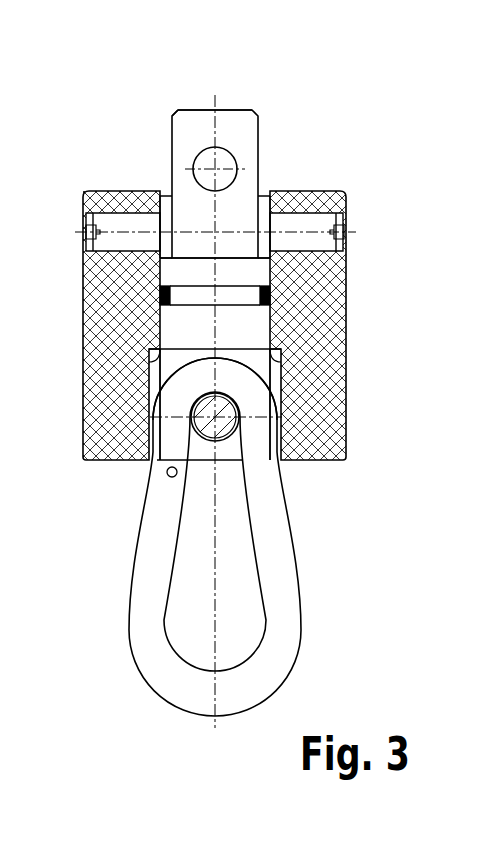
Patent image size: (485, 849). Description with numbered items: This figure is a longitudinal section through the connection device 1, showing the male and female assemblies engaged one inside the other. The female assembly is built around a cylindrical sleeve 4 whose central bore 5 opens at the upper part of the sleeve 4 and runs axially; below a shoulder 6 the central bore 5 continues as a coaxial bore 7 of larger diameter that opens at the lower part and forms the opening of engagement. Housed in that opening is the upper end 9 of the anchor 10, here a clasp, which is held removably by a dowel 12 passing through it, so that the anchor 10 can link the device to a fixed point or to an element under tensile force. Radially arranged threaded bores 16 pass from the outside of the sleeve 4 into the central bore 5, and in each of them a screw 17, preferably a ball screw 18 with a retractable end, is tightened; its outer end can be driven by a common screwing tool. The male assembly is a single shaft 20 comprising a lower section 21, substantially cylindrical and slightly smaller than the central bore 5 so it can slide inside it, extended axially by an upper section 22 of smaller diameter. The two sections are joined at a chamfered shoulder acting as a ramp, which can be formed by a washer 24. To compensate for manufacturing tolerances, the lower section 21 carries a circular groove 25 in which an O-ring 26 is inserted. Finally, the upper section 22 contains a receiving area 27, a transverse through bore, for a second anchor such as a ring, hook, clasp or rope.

The connection device 1 is at (354, 480).
The sleeve 4 is at (332, 426).
The central bore 5 is at (264, 190).
The shoulder 6 is at (150, 352).
The coaxial bore 7 is at (266, 361).
The upper end of the anchor 9 is at (252, 388).
The anchor 10 is at (280, 555).
The dowel 12 is at (210, 412).
The threaded bore 16 is at (343, 222).
The screw 17 is at (112, 224).
The ball screw 18 is at (166, 212).
The shaft 20 is at (232, 108).
The lower section 21 is at (265, 251).
The upper section 22 is at (252, 142).
The washer 24 is at (163, 252).
The circular groove 25 is at (168, 303).
The O-ring 26 is at (270, 294).
The receiving area 27 is at (175, 111).